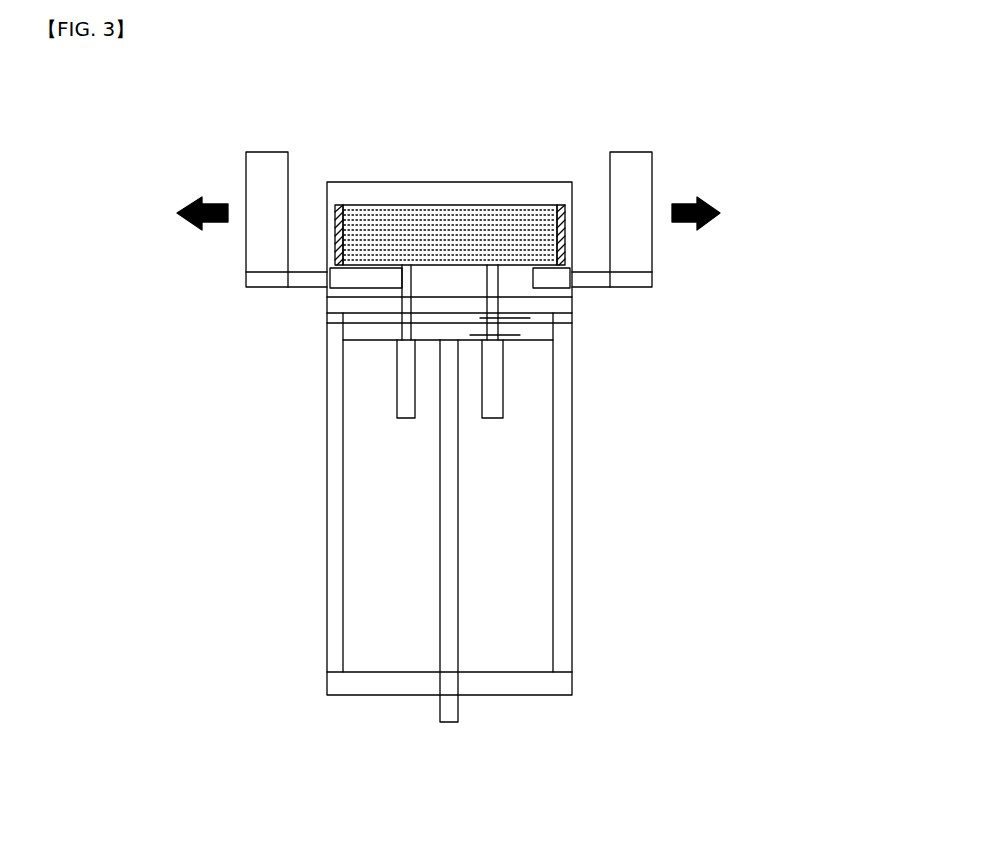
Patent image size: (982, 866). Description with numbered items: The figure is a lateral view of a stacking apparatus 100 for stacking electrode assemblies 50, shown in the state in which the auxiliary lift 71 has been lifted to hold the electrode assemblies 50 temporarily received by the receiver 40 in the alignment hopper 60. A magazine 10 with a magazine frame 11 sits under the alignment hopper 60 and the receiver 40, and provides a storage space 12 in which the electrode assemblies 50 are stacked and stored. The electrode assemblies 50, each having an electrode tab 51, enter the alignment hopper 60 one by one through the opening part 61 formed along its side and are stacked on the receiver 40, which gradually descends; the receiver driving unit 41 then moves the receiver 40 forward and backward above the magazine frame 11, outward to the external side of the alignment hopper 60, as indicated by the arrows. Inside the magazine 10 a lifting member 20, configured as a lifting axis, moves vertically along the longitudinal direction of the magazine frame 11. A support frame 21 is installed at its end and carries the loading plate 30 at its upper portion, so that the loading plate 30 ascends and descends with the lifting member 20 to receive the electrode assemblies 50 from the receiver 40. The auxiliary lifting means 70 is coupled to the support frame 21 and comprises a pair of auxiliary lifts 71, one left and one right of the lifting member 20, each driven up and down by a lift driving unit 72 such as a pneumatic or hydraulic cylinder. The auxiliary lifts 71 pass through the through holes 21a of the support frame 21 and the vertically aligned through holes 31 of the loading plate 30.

The magazine 10 is at (606, 419).
The magazine frame 11 is at (570, 385).
The storage space 12 is at (517, 493).
The lifting member 20 is at (447, 525).
The support frame 21 is at (387, 333).
The through hole 21a is at (500, 335).
The loading plate 30 is at (363, 320).
The through hole 31 is at (500, 318).
The receiver 40 is at (262, 283).
The receiver driving unit 41 is at (647, 187).
The electrode assembly 50 is at (488, 218).
The electrode tab 51 is at (562, 218).
The alignment hopper 60 is at (428, 195).
The opening part 61 is at (324, 220).
The auxiliary lifting means 70 is at (262, 456).
The auxiliary lift 71 is at (405, 287).
The lift driving unit 72 is at (405, 395).
The stacking apparatus 100 is at (883, 290).